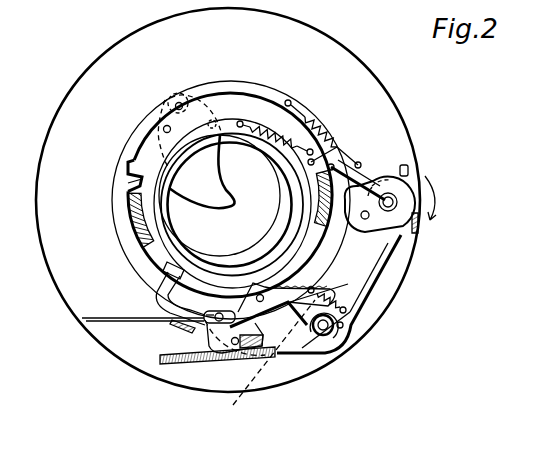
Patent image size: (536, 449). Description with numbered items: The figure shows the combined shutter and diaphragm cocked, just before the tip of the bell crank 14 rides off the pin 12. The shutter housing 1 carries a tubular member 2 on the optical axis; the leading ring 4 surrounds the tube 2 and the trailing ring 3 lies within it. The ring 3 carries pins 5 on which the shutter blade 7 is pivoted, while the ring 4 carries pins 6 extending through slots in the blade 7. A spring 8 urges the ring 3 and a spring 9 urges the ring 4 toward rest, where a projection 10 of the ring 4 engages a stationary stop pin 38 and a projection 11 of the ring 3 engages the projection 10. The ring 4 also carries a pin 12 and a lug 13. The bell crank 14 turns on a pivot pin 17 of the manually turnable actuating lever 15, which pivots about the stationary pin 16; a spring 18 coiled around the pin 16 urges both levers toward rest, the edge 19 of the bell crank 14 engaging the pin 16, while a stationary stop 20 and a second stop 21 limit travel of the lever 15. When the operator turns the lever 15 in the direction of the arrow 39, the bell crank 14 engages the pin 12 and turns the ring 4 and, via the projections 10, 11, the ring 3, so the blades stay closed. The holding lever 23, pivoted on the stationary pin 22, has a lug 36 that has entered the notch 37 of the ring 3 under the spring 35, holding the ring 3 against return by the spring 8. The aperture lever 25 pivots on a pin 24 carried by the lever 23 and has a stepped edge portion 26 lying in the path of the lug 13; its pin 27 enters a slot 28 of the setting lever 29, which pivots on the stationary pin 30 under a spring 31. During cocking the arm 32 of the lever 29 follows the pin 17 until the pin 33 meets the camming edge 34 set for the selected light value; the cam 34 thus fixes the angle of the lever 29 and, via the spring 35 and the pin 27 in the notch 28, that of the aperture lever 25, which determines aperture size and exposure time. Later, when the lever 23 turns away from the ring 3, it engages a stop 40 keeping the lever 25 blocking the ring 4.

The shutter housing 1 is at (70, 92).
The tubular member 2 is at (135, 245).
The trailing ring means 3 is at (292, 157).
The leading ring means 4 is at (130, 222).
The pins 5 is at (213, 120).
The pins 6 is at (179, 99).
The shutter blade 7 is at (212, 187).
The spring 8 is at (270, 140).
The spring 9 is at (322, 142).
The inwardly directed projection 10 is at (135, 163).
The outwardly directed projection 11 is at (127, 182).
The pin 12 is at (312, 170).
The lug 13 is at (307, 247).
The bell crank 14 is at (360, 164).
The manually turnable actuating lever 15 is at (405, 243).
The stationary pin 16 is at (396, 203).
The pivot pin 17 is at (362, 220).
The spring 18 is at (398, 195).
The edge 19 is at (440, 196).
The stationary stop 20 is at (418, 228).
The second stop 21 is at (368, 182).
The stationary pivot pin 22 is at (260, 366).
The holding lever means 23 is at (168, 297).
The pivot pin 24 is at (257, 293).
The aperture lever means 25 is at (226, 313).
The stepped edge portion 26 is at (345, 297).
The pin 27 is at (192, 331).
The slot or notch 28 is at (82, 318).
The setting lever means 29 is at (295, 353).
The stationary pin 30 is at (336, 332).
The spring 31 is at (322, 354).
The arm 32 is at (375, 255).
The pin 33 is at (236, 345).
The camming edge 34 is at (193, 363).
The spring 35 is at (356, 294).
The lug 36 is at (176, 262).
The notch 37 is at (182, 268).
The stationary stop pin 38 is at (163, 126).
The arrow 39 is at (432, 207).
The stop 40 is at (165, 321).